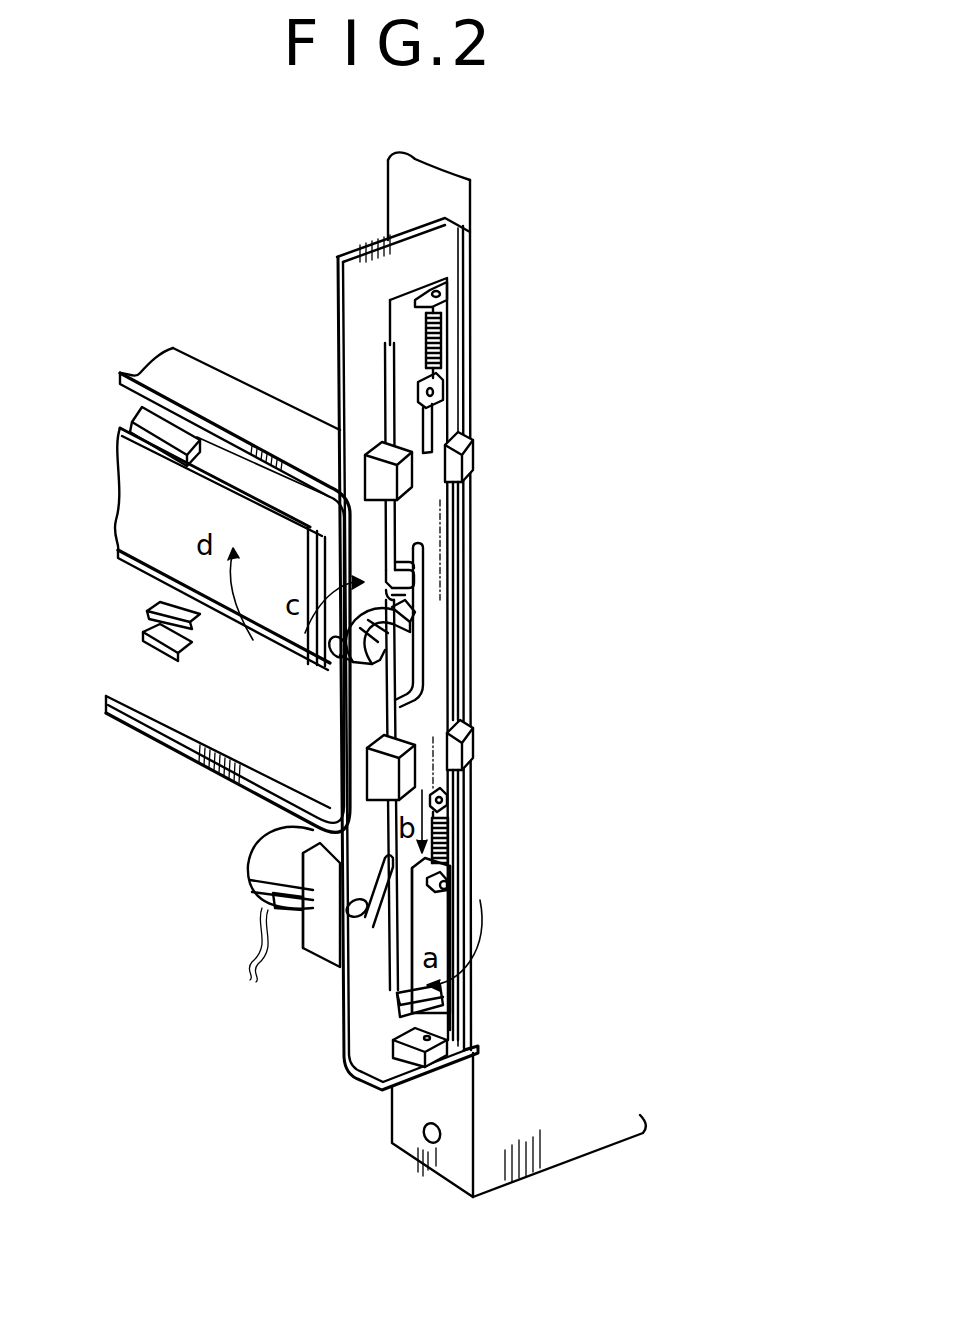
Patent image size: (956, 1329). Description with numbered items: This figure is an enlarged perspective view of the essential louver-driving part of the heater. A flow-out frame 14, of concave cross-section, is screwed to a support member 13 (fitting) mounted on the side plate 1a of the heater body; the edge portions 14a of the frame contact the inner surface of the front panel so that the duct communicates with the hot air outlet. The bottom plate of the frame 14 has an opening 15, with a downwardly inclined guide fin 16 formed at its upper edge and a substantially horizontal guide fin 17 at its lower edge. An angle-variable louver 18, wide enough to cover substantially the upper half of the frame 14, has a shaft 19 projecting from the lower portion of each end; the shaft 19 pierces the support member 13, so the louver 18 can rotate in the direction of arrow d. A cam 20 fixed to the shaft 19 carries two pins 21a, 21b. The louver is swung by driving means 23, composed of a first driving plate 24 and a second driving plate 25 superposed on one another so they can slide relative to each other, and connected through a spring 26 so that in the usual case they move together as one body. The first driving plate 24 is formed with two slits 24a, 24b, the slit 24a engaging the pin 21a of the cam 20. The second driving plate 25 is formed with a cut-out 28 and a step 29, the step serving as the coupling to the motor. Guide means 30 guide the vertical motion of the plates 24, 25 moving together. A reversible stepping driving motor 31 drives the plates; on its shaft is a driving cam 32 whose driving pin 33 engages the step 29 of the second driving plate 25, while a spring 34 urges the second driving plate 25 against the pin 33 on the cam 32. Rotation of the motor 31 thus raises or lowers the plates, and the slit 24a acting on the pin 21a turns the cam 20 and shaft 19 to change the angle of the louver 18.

The side plate 1a is at (397, 192).
The support member 13 is at (352, 250).
The flow-out frame 14 is at (212, 380).
The edge portion 14a is at (150, 755).
The opening 15 is at (150, 612).
The guide fin 16 is at (145, 410).
The guide fin 17 is at (150, 650).
The angle-variable louver 18 is at (118, 547).
The shaft 19 is at (337, 660).
The cam 20 is at (407, 682).
The pin 21a is at (410, 640).
The pin 21b is at (377, 657).
The driving means 23 is at (388, 397).
The first driving plate 24 is at (410, 700).
The slit 24a is at (407, 610).
The slit 24b is at (415, 578).
The second driving plate 25 is at (445, 507).
The spring 26 is at (445, 348).
The cut-out 28 is at (453, 710).
The step 29 is at (450, 860).
The guide means 30 is at (468, 458).
The driving motor 31 is at (268, 902).
The driving cam 32 is at (387, 933).
The driving pin 33 is at (460, 915).
The spring 34 is at (447, 830).